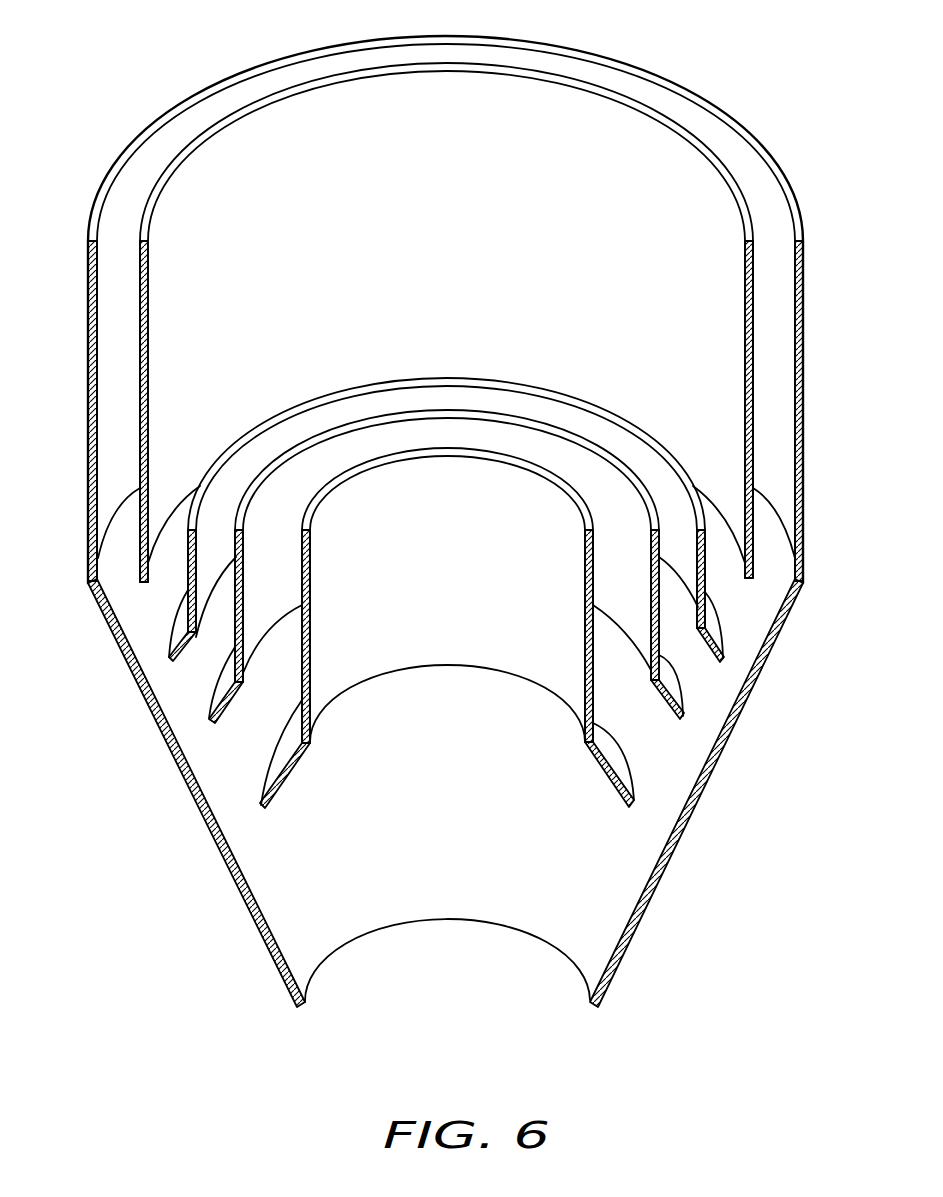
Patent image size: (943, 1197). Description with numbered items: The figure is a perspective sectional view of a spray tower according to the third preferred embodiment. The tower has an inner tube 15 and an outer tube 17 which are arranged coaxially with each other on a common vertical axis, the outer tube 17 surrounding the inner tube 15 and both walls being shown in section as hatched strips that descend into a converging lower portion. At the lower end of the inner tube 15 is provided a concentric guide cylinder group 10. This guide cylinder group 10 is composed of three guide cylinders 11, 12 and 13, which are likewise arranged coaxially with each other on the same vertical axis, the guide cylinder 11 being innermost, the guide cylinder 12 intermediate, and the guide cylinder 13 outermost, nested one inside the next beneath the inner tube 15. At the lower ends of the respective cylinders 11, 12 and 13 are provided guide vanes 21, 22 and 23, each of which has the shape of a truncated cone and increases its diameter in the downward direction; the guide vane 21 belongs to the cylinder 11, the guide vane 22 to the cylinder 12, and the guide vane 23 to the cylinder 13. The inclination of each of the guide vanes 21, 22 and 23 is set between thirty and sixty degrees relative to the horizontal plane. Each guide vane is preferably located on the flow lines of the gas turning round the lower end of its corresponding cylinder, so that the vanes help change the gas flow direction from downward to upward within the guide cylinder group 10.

The guide cylinder group 10 is at (457, 352).
The guide cylinder 11 is at (460, 655).
The guide cylinder 12 is at (340, 450).
The guide cylinder 13 is at (218, 498).
The inner tube 15 is at (644, 128).
The outer tube 17 is at (757, 178).
The guide vane 21 is at (274, 767).
The guide vane 22 is at (214, 703).
The guide vane 23 is at (172, 641).